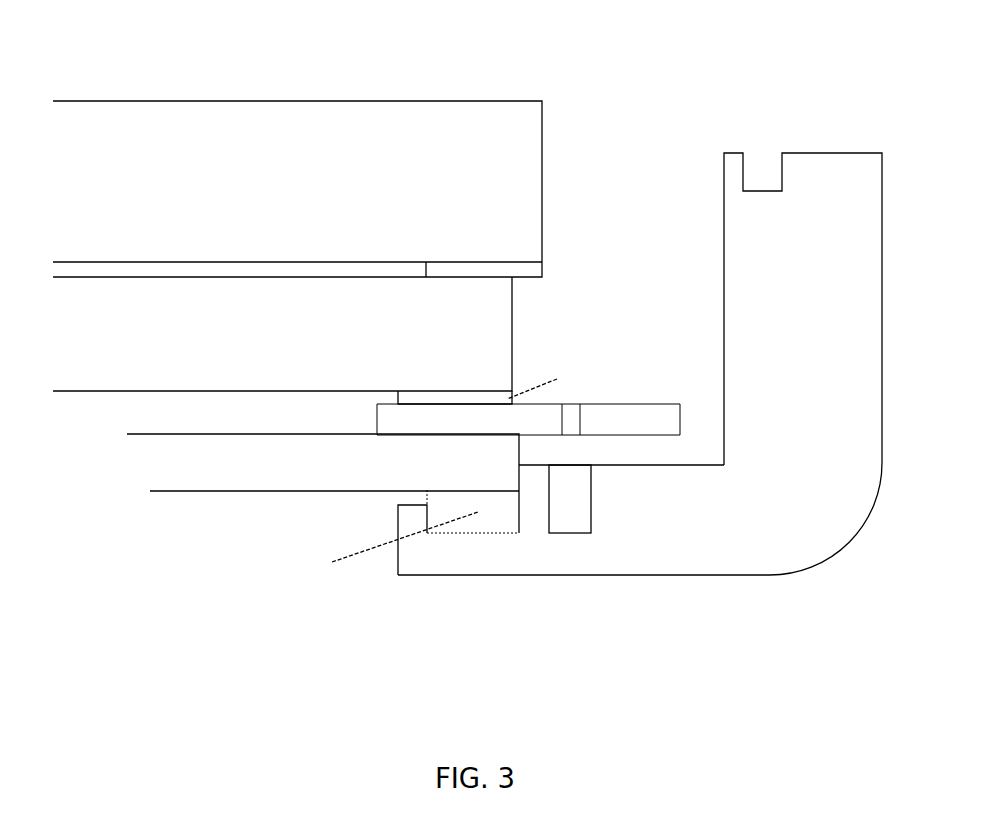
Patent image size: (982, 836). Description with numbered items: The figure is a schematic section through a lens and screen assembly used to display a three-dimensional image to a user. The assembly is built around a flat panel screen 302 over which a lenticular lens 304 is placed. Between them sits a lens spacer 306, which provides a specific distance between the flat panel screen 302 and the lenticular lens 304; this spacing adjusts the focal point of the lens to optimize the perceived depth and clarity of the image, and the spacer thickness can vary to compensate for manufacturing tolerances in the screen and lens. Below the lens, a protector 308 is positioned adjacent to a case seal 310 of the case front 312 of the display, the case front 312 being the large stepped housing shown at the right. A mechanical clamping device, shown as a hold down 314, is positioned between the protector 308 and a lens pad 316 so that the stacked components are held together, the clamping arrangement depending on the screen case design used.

The flat panel screen 302 is at (268, 108).
The lenticular lens 304 is at (213, 347).
The lens spacer 306 is at (507, 258).
The protector 308 is at (150, 485).
The case seal 310 is at (487, 518).
The case front 312 is at (728, 568).
The hold down 314 is at (405, 432).
The lens pad 316 is at (420, 400).